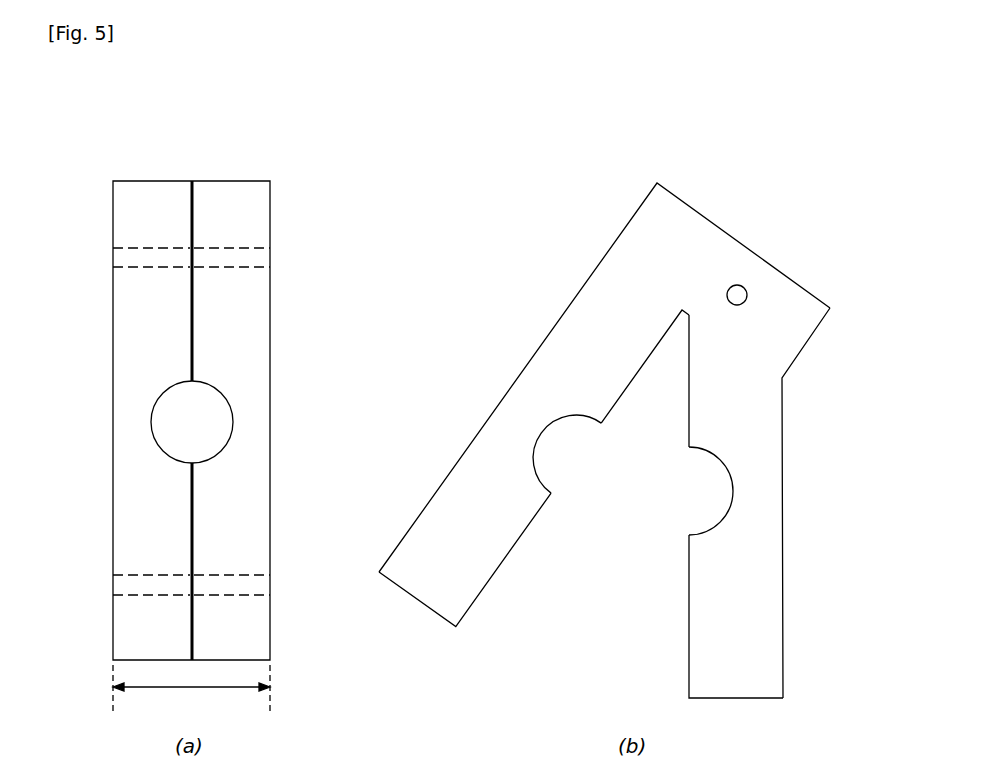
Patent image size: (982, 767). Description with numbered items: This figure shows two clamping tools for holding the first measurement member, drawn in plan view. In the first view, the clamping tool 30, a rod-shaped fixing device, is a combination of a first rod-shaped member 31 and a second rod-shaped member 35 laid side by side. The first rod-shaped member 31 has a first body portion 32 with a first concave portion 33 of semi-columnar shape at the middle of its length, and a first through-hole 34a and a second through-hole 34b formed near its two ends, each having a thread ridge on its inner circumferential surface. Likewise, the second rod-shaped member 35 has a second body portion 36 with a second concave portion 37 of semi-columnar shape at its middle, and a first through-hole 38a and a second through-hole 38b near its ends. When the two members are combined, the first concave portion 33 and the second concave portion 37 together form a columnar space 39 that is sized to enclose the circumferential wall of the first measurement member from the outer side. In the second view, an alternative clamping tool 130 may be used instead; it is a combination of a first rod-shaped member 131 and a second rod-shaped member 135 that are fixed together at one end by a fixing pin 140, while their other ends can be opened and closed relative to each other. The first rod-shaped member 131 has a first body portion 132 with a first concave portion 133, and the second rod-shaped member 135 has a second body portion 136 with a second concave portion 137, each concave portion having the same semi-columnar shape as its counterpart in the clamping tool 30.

The clamping tool 30 is at (247, 108).
The first rod-shaped member 31 is at (149, 172).
The first body portion 32 is at (130, 342).
The first concave portion 33 is at (152, 426).
The first through-hole 34a is at (127, 583).
The second through-hole 34b is at (128, 257).
The second rod-shaped member 35 is at (231, 172).
The second body portion 36 is at (260, 323).
The second concave portion 37 is at (231, 426).
The first through-hole 38a is at (258, 583).
The second through-hole 38b is at (258, 262).
The columnar space 39 is at (205, 427).
The clamping tool 130 is at (740, 214).
The first rod-shaped member 131 is at (605, 255).
The first body portion 132 is at (558, 343).
The first concave portion 133 is at (538, 475).
The second rod-shaped member 135 is at (783, 433).
The second body portion 136 is at (767, 582).
The second concave portion 137 is at (710, 527).
The fixing pin 140 is at (747, 293).